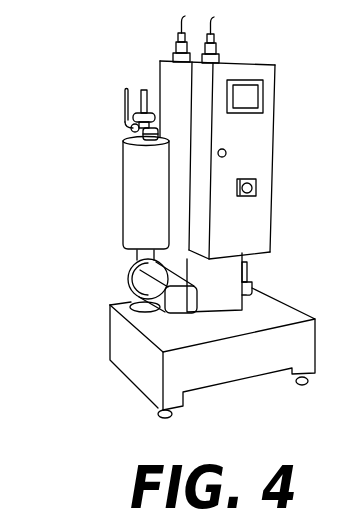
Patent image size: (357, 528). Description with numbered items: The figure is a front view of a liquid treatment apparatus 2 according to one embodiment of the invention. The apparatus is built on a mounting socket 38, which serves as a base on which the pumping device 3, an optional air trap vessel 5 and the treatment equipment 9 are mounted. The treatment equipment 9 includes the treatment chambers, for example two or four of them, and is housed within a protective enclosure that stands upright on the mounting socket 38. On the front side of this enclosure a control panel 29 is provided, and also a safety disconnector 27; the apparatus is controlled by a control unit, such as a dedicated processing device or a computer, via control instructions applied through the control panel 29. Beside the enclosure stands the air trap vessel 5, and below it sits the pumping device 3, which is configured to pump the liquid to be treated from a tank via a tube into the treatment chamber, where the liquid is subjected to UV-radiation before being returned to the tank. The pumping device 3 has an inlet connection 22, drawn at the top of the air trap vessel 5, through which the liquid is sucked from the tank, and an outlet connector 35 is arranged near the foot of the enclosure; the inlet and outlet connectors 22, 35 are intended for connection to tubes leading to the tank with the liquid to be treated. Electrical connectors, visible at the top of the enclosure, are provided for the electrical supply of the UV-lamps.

The liquid treatment apparatus 2 is at (82, 65).
The pumping device 3 is at (140, 278).
The air trap vessel 5 is at (152, 212).
The treatment equipment 9 is at (252, 157).
The inlet connection 22 is at (145, 88).
The safety disconnector 27 is at (258, 185).
The control panel 29 is at (240, 98).
The outlet connector 35 is at (250, 283).
The mounting socket 38 is at (248, 367).